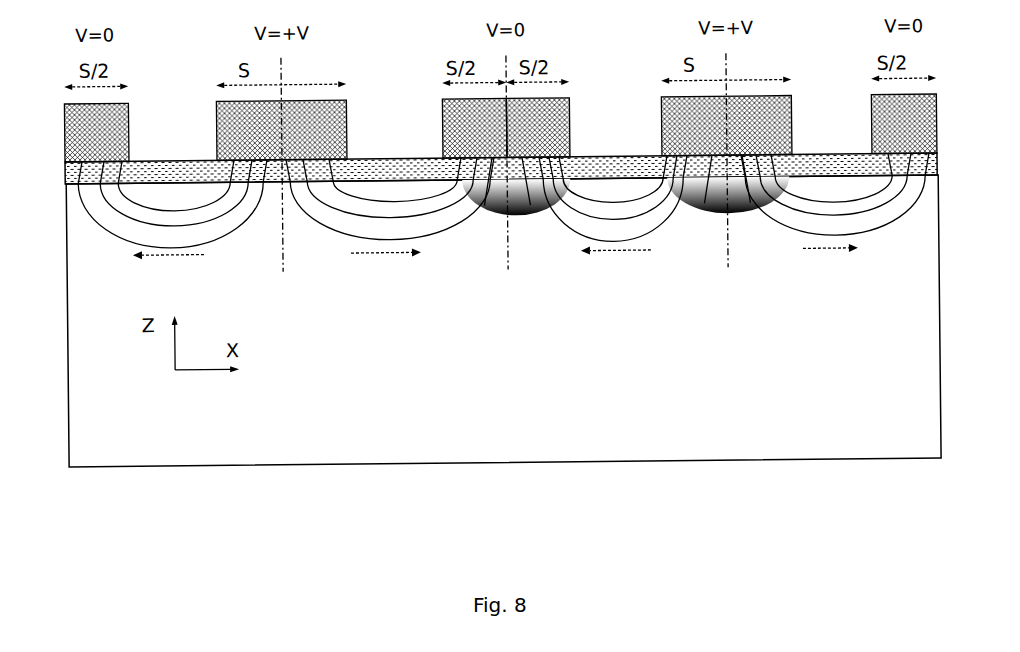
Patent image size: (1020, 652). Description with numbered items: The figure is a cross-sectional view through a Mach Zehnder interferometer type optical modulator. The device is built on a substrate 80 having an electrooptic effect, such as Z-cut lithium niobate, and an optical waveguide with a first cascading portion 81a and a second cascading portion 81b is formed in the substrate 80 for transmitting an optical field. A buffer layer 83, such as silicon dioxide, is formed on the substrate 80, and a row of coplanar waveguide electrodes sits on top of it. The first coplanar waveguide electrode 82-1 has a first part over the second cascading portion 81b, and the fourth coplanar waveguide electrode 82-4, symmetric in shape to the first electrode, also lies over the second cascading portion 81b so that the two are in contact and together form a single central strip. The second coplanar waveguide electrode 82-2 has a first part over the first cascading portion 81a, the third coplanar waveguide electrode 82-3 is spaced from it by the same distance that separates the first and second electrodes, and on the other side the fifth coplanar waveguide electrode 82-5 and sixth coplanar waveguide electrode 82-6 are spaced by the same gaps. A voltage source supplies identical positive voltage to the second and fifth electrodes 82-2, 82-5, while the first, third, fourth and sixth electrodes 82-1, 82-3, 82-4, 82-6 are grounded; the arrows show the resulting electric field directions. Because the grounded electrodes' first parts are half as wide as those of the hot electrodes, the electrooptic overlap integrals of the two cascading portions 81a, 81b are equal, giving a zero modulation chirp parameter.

The substrate 80 is at (102, 443).
The first cascading portion 81a is at (707, 220).
The second cascading portion 81b is at (495, 220).
The first coplanar waveguide electrode 82-1 is at (545, 137).
The second coplanar waveguide electrode 82-2 is at (767, 128).
The third coplanar waveguide electrode 82-3 is at (873, 113).
The fourth coplanar waveguide electrode 82-4 is at (443, 114).
The fifth coplanar waveguide electrode 82-5 is at (328, 126).
The sixth coplanar waveguide electrode 82-6 is at (117, 126).
The buffer layer 83 is at (73, 180).